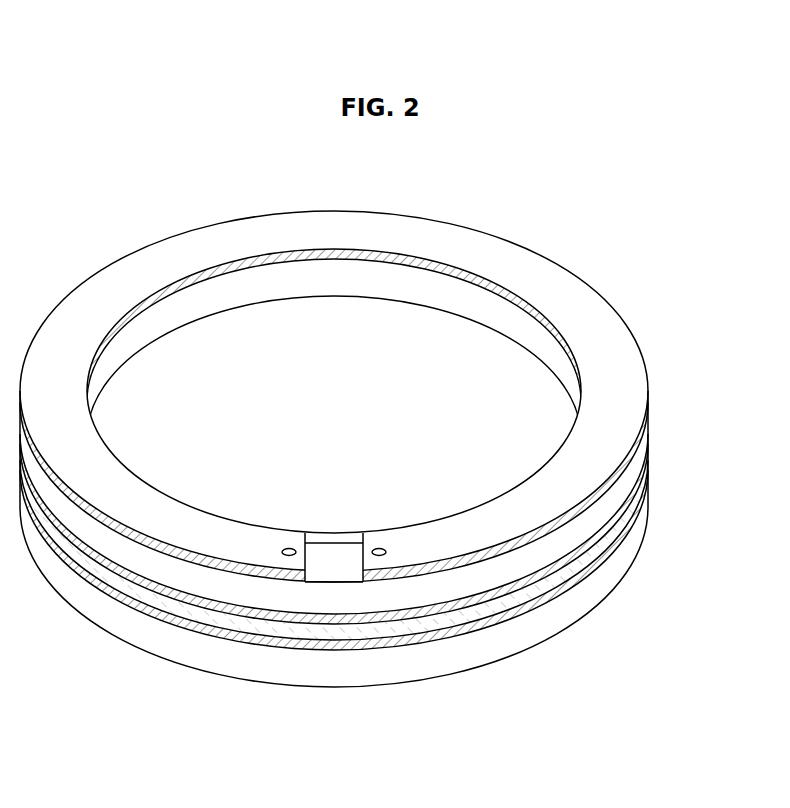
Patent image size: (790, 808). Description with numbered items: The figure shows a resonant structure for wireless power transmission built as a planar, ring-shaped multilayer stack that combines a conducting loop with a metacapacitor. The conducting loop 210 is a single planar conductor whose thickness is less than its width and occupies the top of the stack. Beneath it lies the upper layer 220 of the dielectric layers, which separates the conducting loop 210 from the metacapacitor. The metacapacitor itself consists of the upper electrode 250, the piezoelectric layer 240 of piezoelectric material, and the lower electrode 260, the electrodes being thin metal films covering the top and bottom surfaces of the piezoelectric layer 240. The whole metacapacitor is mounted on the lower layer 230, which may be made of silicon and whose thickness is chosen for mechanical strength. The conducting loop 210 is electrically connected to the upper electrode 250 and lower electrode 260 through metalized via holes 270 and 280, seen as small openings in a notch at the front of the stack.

The conducting loop 210 is at (472, 245).
The upper layer 220 is at (638, 465).
The lower layer 230 is at (638, 535).
The piezoelectric layer 240 is at (333, 634).
The upper electrode 250 is at (232, 613).
The lower electrode 260 is at (432, 639).
The metalized via hole 270 is at (288, 547).
The metalized via hole 280 is at (380, 547).